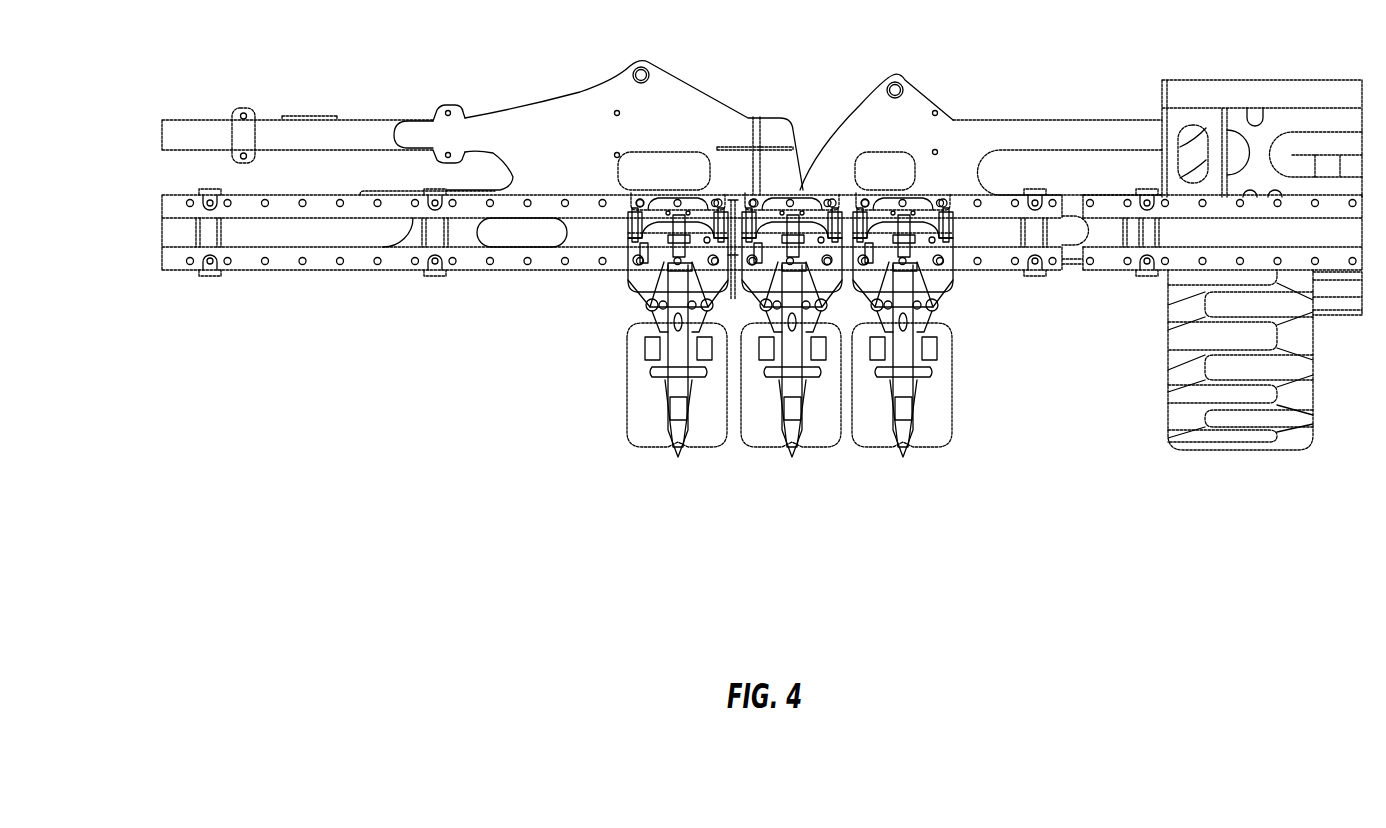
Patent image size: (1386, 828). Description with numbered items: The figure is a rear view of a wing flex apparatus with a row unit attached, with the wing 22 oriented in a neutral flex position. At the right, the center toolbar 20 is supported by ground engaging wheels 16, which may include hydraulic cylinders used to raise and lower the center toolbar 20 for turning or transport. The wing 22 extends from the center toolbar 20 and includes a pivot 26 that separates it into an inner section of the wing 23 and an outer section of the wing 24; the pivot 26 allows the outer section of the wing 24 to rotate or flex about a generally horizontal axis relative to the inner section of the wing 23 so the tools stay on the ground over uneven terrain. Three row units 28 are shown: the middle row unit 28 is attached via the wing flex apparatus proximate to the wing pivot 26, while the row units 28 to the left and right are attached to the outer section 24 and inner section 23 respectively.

The ground engaging wheels 16 is at (1250, 452).
The center toolbar 20 is at (1294, 75).
The wing 22 is at (378, 120).
The inner section of the wing 23 is at (1038, 119).
The outer section of the wing 24 is at (265, 119).
The pivot 26 is at (818, 109).
The row unit 28 is at (948, 446).